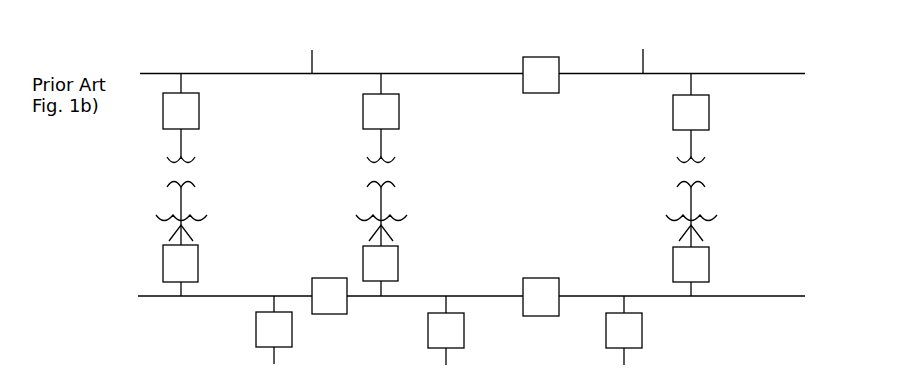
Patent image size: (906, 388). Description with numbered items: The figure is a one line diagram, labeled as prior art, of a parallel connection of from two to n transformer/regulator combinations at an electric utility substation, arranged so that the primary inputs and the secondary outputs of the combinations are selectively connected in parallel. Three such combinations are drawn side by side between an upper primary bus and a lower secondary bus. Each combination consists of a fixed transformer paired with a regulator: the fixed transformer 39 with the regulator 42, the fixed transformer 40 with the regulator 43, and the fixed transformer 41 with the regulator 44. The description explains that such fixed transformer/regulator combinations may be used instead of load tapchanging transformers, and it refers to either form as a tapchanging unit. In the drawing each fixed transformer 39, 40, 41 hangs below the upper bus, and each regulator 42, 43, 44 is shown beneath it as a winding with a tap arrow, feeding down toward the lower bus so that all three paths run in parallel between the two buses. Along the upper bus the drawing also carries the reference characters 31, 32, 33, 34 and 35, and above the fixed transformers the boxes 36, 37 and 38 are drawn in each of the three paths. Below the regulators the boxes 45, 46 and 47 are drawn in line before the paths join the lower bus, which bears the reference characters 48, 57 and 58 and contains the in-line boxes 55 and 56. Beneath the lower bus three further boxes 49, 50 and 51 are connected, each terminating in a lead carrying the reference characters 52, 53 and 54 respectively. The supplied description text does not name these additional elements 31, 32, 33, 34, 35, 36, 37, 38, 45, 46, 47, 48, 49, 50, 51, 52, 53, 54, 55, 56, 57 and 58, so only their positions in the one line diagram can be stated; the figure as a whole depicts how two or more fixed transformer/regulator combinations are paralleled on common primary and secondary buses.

The first bus boundary tick 31 is at (318, 50).
The second bus boundary tick 32 is at (648, 56).
The first bus segment 33 is at (362, 67).
The bus coupler 34 is at (562, 53).
The second bus segment 35 is at (720, 68).
The first transceiver unit 36 is at (200, 118).
The second transceiver unit 37 is at (400, 118).
The third transceiver unit 38 is at (710, 118).
The fixed transformer 39 is at (197, 168).
The fixed transformer 40 is at (397, 168).
The fixed transformer 41 is at (707, 168).
The regulator 42 is at (205, 218).
The regulator 43 is at (408, 218).
The regulator 44 is at (720, 218).
The first receiving unit 45 is at (199, 268).
The second receiving unit 46 is at (400, 268).
The third receiving unit 47 is at (710, 268).
The lower bus segment 48 is at (757, 292).
The first bus station 49 is at (256, 330).
The second bus station 50 is at (465, 330).
The third bus station 51 is at (643, 333).
The first station connection 52 is at (278, 362).
The second station connection 53 is at (450, 362).
The third station connection 54 is at (628, 362).
The first lower bus coupler 55 is at (316, 277).
The second lower bus coupler 56 is at (552, 276).
The lower bus left segment 57 is at (190, 300).
The lower bus middle segment 58 is at (400, 302).